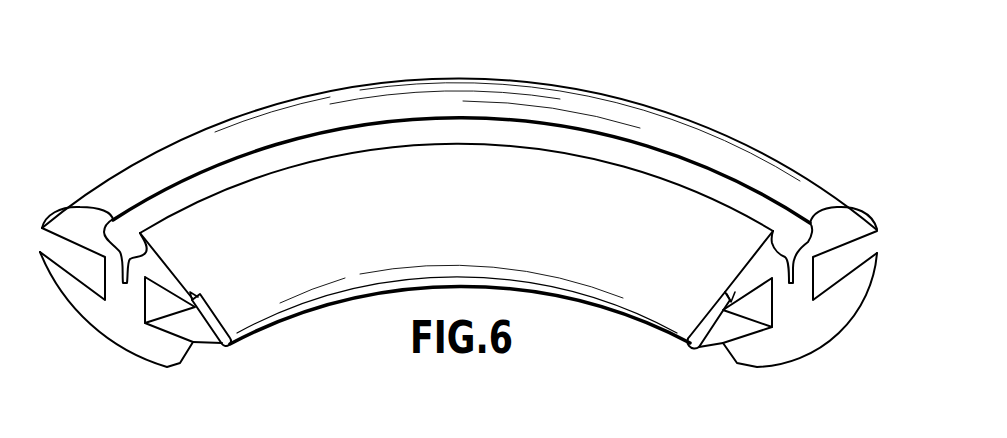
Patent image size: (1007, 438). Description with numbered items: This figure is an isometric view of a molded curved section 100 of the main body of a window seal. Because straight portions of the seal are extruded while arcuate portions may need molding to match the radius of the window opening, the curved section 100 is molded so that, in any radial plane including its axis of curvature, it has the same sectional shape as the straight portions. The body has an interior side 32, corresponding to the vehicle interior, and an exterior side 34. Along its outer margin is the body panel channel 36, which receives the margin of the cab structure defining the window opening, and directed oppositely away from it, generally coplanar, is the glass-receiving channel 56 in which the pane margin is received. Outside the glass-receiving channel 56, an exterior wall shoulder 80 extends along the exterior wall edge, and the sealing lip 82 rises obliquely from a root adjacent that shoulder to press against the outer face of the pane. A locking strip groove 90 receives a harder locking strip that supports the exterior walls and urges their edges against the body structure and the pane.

The curved section 100 is at (690, 118).
The exterior side 34 is at (207, 157).
The locking strip groove 90 is at (420, 130).
The interior side 32 is at (112, 348).
The body panel channel 36 is at (833, 267).
The glass-receiving channel 56 is at (745, 327).
The exterior wall shoulder 80 is at (203, 296).
The sealing lip 82 is at (263, 308).